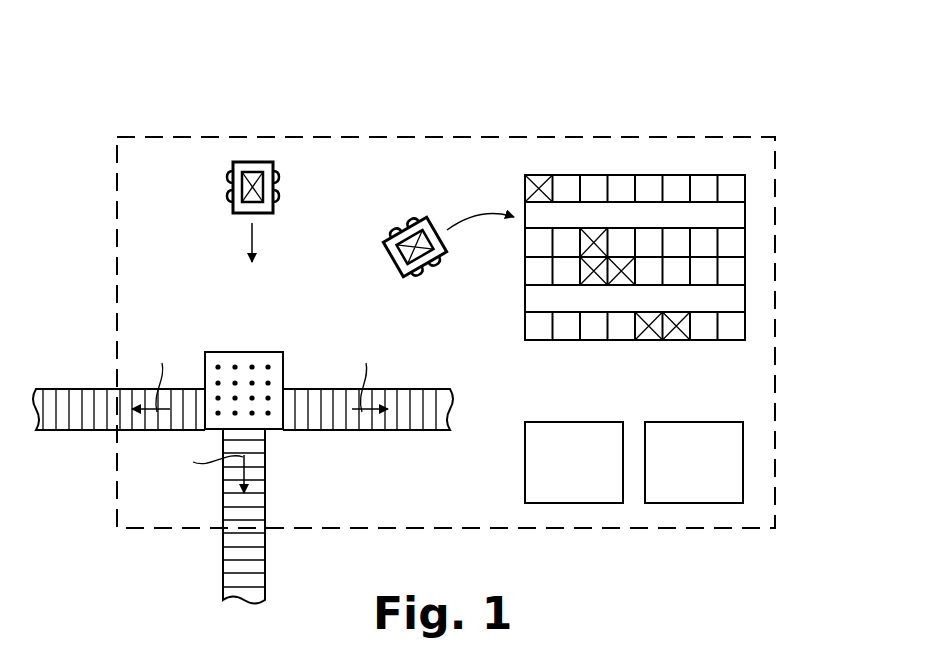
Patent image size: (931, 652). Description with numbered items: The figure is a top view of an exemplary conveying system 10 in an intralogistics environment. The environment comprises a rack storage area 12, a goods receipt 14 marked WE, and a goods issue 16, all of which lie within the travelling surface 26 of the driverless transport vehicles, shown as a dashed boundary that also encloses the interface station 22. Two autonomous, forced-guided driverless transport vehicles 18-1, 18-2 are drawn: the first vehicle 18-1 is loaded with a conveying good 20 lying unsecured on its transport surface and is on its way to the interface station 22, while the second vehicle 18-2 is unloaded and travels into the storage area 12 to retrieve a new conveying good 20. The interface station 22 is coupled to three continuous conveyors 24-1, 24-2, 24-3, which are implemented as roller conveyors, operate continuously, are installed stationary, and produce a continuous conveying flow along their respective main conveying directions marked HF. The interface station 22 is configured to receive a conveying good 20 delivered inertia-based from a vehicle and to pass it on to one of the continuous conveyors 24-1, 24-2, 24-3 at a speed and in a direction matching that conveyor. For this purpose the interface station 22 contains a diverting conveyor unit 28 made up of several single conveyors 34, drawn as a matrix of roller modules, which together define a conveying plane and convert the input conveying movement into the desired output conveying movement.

The conveying system 10 is at (176, 94).
The storage area 12 is at (678, 168).
The goods receipt 14 is at (574, 462).
The goods issue 16 is at (694, 462).
The driverless transport vehicle 18-1 is at (213, 150).
The driverless transport vehicle 18-2 is at (429, 263).
The conveying good 20 is at (252, 170).
The interface station 22 is at (279, 352).
The continuous conveyor 24-1 is at (146, 432).
The continuous conveyor 24-2 is at (265, 497).
The continuous conveyor 24-3 is at (402, 432).
The travelling surface 26 is at (775, 283).
The diverting conveyor unit 28 is at (283, 367).
The single conveyors 34 is at (235, 381).